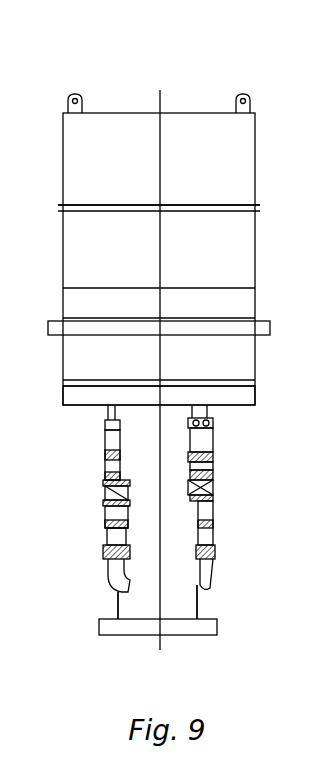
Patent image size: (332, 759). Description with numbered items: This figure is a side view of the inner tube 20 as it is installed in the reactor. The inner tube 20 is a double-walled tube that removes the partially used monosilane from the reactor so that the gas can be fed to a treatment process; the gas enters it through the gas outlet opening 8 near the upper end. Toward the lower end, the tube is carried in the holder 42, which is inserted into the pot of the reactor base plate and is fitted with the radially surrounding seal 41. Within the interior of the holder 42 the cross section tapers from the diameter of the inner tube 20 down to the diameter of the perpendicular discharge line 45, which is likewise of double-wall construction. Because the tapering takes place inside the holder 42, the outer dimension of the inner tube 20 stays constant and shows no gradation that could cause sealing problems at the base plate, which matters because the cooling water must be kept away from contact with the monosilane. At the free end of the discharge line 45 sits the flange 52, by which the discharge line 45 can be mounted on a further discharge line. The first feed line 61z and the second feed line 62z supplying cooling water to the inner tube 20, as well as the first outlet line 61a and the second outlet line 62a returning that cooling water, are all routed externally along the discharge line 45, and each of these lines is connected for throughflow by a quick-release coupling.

The gas outlet opening 8 is at (127, 113).
The inner tube 20 is at (257, 149).
The seal 41 is at (60, 325).
The holder 42 is at (243, 352).
The first feed line 61z is at (104, 452).
The second feed line 62z is at (214, 456).
The second outlet line 62a is at (103, 520).
The first outlet line 61a is at (217, 520).
The discharge line 45 is at (178, 578).
The flange 52 is at (99, 626).